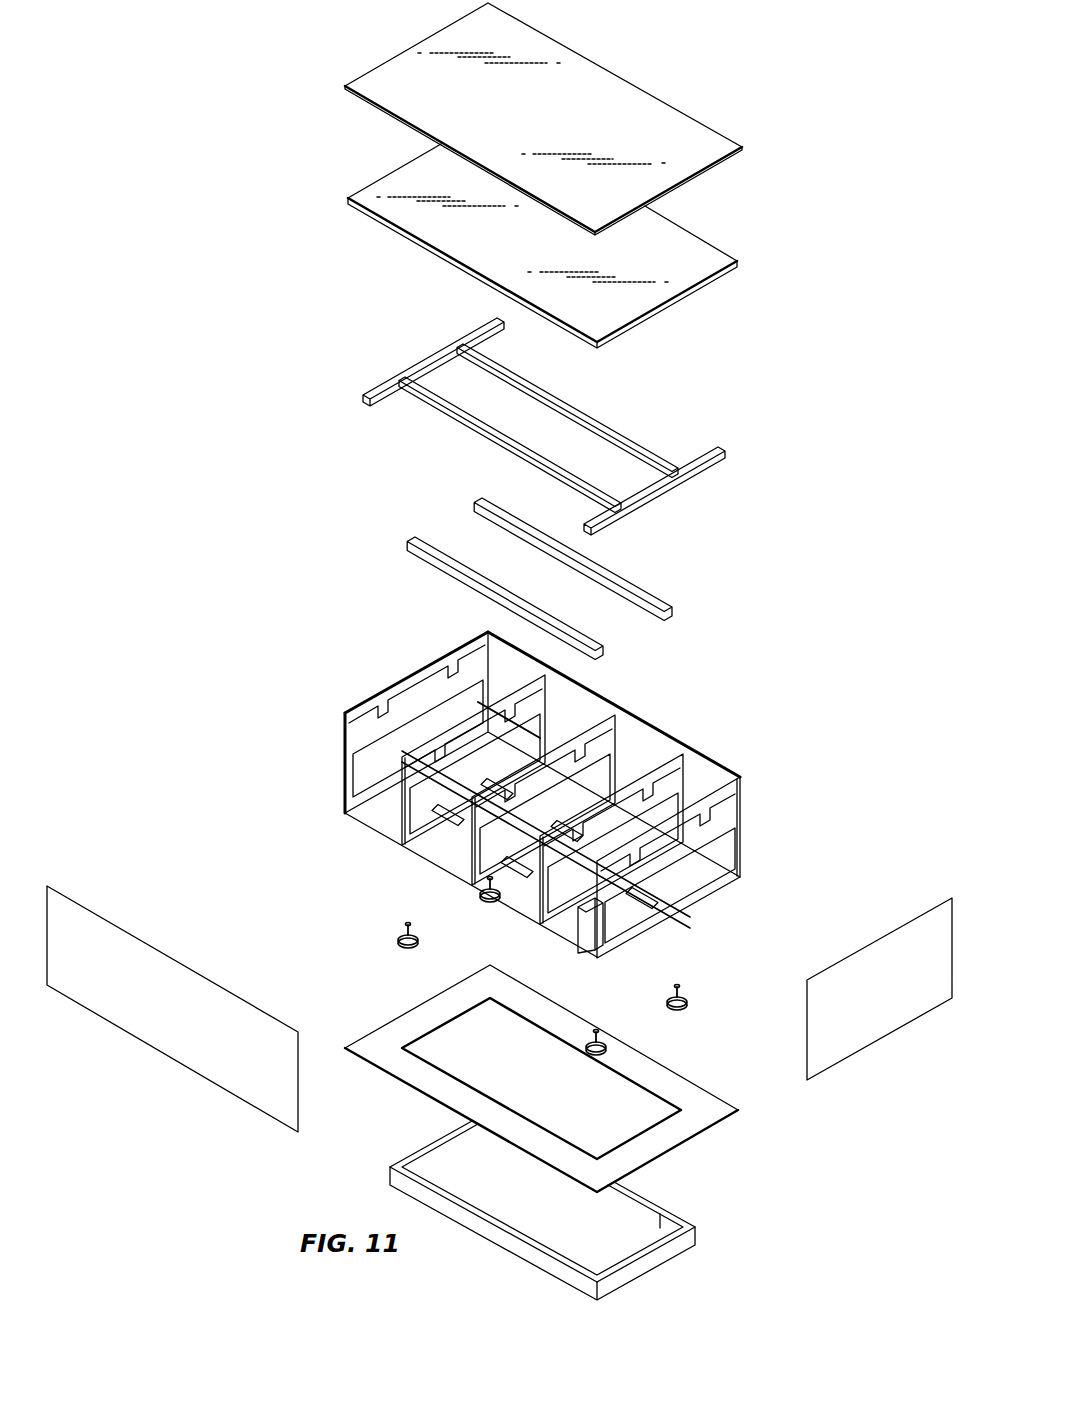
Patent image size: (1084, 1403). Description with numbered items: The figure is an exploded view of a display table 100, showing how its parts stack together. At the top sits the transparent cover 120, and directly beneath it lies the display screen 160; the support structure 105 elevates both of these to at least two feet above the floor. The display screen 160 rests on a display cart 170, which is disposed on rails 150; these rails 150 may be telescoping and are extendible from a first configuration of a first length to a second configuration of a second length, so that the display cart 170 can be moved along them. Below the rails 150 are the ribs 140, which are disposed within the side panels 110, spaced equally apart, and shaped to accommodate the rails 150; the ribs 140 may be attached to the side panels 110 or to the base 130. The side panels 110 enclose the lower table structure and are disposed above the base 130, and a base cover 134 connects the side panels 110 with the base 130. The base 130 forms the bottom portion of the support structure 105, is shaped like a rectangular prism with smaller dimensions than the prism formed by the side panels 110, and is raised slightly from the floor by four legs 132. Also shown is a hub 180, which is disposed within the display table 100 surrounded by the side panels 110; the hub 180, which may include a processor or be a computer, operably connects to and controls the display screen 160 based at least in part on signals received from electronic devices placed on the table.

The display table 100 is at (868, 173).
The support structure 105 is at (383, 666).
The side panels 110 is at (110, 1000).
The transparent cover 120 is at (385, 68).
The base 130 is at (670, 1247).
The legs 132 is at (590, 1060).
The base cover 134 is at (690, 1128).
The ribs 140 is at (347, 752).
The rails 150 is at (663, 593).
The display screen 160 is at (707, 254).
The display cart 170 is at (697, 476).
The hub 180 is at (580, 937).